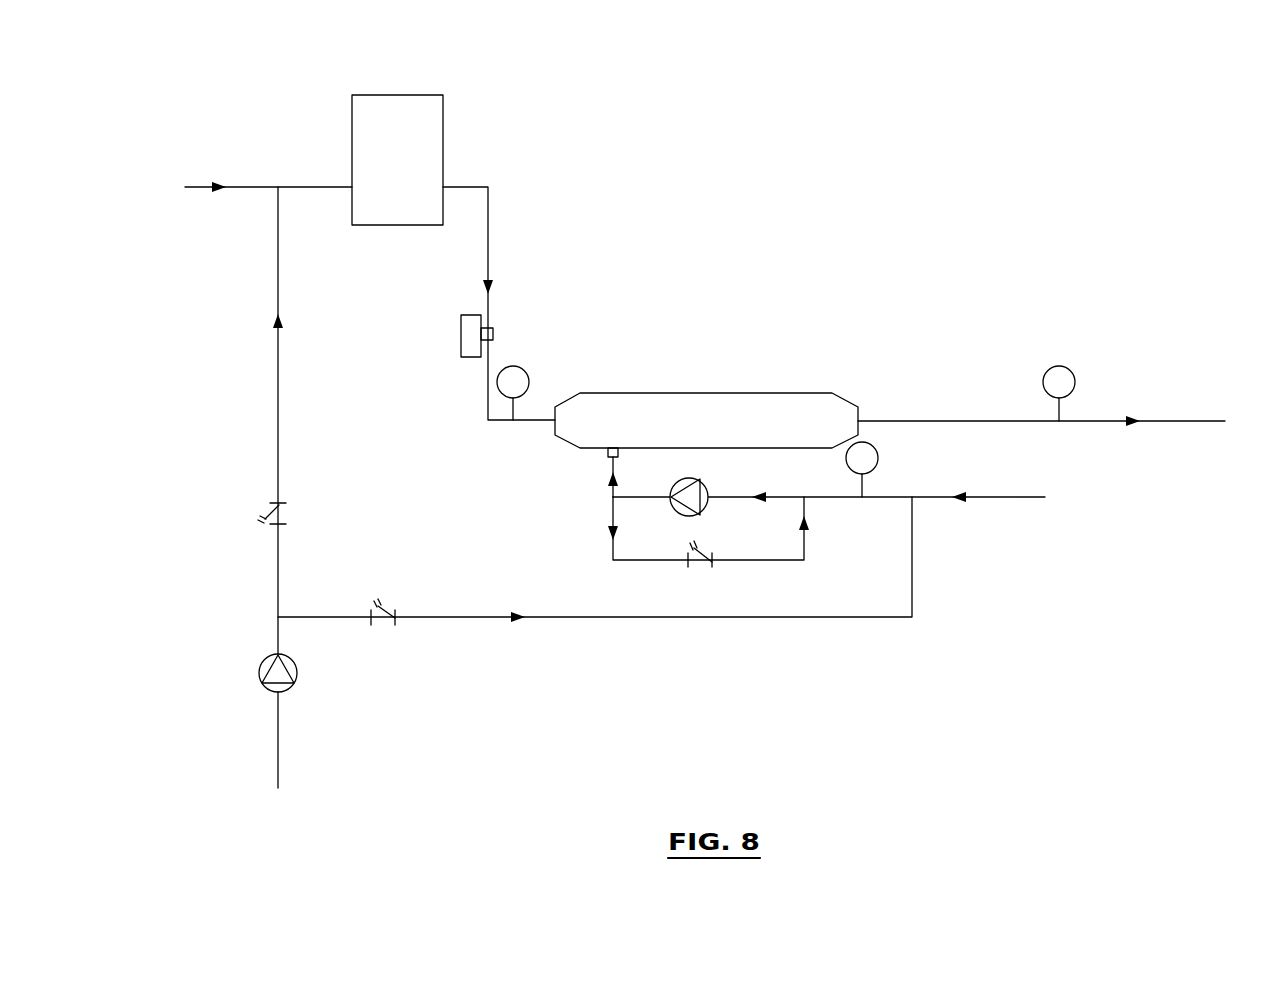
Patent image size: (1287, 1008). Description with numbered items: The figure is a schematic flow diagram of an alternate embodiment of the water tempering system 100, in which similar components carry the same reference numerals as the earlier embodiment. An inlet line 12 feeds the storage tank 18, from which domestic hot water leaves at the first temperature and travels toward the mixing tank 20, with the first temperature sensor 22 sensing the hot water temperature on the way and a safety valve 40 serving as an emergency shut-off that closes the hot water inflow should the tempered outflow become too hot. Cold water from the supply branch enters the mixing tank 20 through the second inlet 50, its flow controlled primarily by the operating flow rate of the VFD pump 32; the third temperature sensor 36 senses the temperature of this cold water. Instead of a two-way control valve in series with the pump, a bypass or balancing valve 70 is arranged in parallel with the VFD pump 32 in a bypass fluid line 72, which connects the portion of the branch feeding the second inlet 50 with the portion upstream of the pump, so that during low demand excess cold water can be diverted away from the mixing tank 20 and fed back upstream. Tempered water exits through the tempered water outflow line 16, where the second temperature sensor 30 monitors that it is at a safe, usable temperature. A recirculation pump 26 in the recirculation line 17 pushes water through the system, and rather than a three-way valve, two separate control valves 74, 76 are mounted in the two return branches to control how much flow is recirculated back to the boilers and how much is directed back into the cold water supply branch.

The water tempering system 100 is at (1052, 181).
The inlet line 12 is at (250, 187).
The storage tank 18 is at (413, 166).
The safety valve 40 is at (461, 350).
The first temperature sensor 22 is at (526, 378).
The mixing tank 20 is at (726, 434).
The second inlet 50 is at (618, 452).
The VFD pump 32 is at (703, 509).
The bypass fluid line 72 is at (613, 548).
The bypass or balancing valve 70 is at (712, 563).
The third temperature sensor 36 is at (878, 464).
The second temperature sensor 30 is at (1072, 378).
The tempered water outflow line 16 is at (1177, 421).
The control valve 76 is at (396, 620).
The control valve 74 is at (280, 524).
The recirculation pump 26 is at (294, 684).
The recirculation line 17 is at (278, 750).